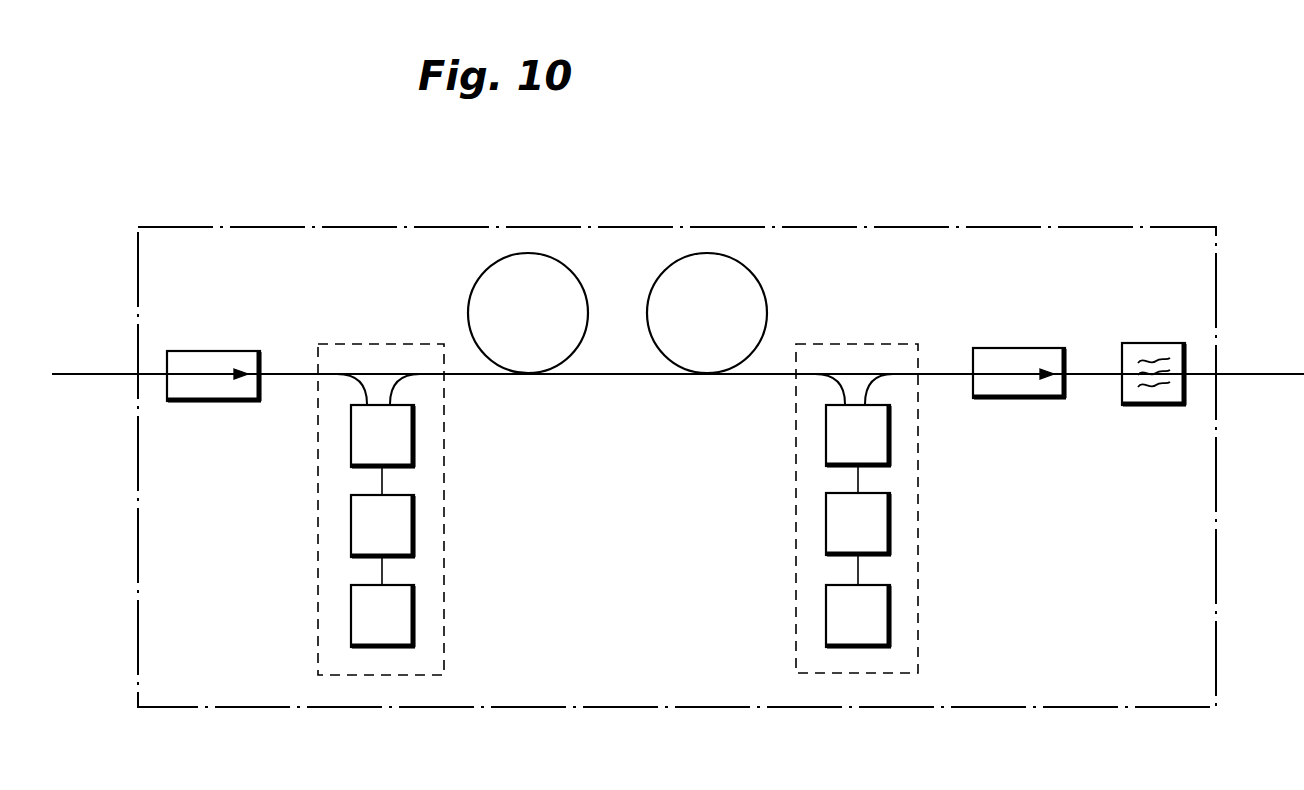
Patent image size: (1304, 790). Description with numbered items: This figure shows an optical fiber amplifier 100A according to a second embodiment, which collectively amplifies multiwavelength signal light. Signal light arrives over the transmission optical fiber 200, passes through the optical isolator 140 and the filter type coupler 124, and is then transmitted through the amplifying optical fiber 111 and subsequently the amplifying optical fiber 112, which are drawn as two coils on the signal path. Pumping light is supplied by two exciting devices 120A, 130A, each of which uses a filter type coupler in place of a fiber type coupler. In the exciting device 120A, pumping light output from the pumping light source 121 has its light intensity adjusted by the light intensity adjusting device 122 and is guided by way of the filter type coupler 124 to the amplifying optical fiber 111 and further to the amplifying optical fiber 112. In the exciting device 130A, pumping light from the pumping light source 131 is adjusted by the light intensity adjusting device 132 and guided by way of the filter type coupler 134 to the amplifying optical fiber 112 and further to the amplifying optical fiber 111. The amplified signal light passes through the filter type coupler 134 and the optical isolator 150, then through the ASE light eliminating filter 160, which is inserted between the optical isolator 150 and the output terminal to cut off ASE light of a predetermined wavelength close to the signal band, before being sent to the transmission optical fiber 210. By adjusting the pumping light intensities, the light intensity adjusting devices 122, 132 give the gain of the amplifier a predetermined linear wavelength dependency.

The optical fiber amplifier 100A is at (330, 226).
The amplifying optical fiber 111 is at (528, 253).
The amplifying optical fiber 112 is at (707, 253).
The exciting device 120A is at (444, 605).
The pumping light source 121 is at (351, 625).
The light intensity adjusting device 122 is at (351, 535).
The filter type coupler 124 is at (414, 435).
The exciting device 130A is at (795, 590).
The pumping light source 131 is at (890, 615).
The light intensity adjusting device 132 is at (890, 530).
The filter type coupler 134 is at (826, 435).
The optical isolator 140 is at (220, 402).
The optical isolator 150 is at (1030, 398).
The ASE light eliminating filter 160 is at (1160, 405).
The transmission optical fiber 200 is at (82, 374).
The transmission optical fiber 210 is at (1267, 374).